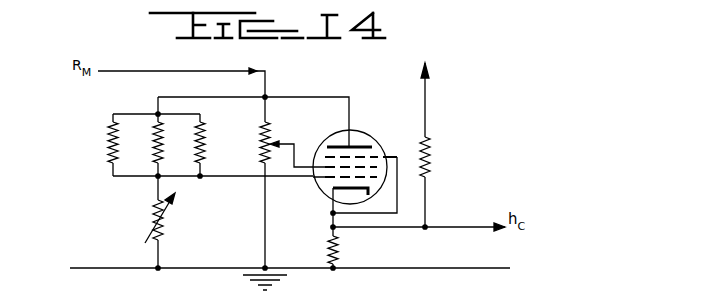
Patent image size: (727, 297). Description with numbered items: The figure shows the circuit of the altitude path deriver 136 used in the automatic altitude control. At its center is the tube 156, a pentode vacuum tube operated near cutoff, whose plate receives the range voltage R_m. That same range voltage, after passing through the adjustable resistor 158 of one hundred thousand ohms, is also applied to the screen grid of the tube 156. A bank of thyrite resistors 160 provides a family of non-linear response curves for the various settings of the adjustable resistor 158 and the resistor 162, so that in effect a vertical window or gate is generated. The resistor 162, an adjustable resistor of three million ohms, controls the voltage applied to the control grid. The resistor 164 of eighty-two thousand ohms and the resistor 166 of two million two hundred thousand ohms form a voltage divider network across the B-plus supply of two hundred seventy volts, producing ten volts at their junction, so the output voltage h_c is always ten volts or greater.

The altitude path deriver 136 is at (108, 142).
The tube 156 is at (374, 127).
The adjustable resistor 158 is at (270, 142).
The thyrite resistors 160 is at (203, 132).
The resistor 162 is at (156, 222).
The resistor 164 is at (336, 235).
The resistor 166 is at (430, 156).